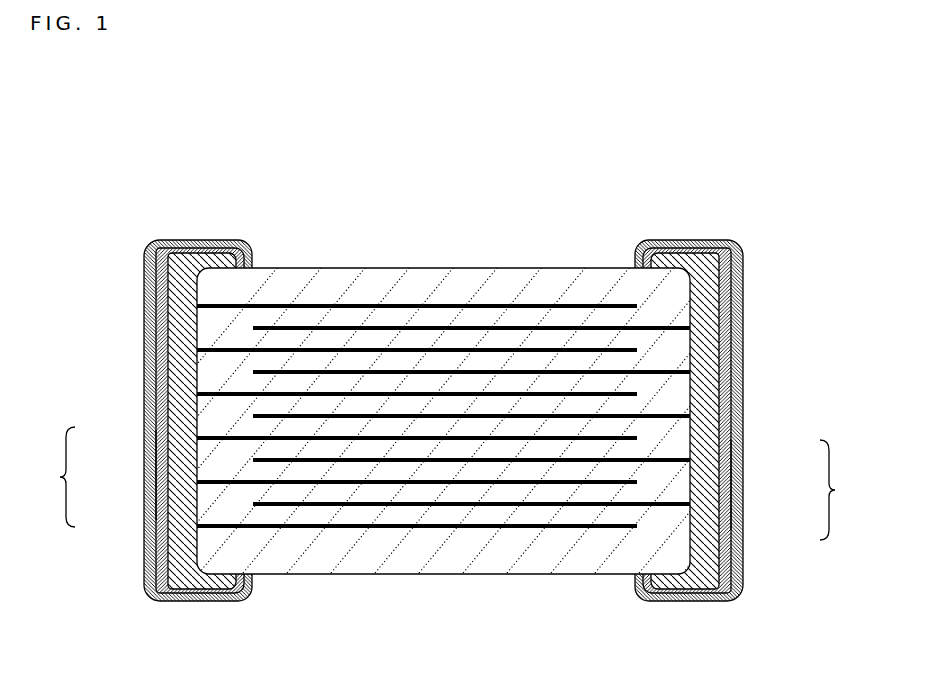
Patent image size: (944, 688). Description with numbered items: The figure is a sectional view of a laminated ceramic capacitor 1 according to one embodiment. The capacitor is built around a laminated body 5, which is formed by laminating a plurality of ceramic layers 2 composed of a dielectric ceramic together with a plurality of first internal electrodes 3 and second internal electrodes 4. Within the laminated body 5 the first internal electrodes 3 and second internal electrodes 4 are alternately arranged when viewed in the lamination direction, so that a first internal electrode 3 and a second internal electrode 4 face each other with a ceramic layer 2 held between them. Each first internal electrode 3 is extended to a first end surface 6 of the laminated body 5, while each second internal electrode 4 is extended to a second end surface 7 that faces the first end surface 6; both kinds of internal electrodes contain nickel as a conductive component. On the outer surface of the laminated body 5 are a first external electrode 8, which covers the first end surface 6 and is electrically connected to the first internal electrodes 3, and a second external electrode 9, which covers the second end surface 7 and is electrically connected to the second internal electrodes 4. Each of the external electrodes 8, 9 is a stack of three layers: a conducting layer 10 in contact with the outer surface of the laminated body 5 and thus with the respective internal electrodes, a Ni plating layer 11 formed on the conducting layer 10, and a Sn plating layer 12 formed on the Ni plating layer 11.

The laminated ceramic capacitor 1 is at (273, 166).
The ceramic layer 2 is at (425, 337).
The first internal electrode 3 is at (333, 353).
The second internal electrode 4 is at (517, 367).
The laminated body 5 is at (600, 268).
The first end surface 6 is at (185, 366).
The second end surface 7 is at (692, 386).
The first external electrode 8 is at (96, 477).
The second external electrode 9 is at (795, 490).
The conducting layer 10 is at (168, 441).
The Ni plating layer 11 is at (150, 479).
The Sn plating layer 12 is at (150, 518).